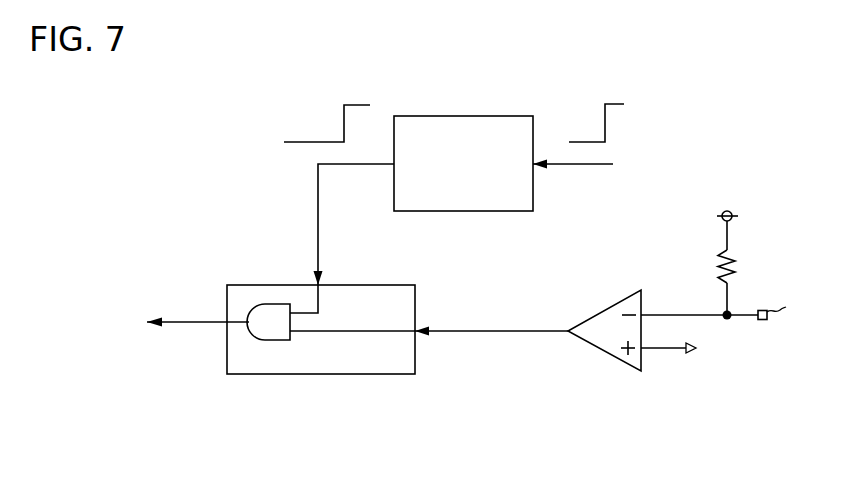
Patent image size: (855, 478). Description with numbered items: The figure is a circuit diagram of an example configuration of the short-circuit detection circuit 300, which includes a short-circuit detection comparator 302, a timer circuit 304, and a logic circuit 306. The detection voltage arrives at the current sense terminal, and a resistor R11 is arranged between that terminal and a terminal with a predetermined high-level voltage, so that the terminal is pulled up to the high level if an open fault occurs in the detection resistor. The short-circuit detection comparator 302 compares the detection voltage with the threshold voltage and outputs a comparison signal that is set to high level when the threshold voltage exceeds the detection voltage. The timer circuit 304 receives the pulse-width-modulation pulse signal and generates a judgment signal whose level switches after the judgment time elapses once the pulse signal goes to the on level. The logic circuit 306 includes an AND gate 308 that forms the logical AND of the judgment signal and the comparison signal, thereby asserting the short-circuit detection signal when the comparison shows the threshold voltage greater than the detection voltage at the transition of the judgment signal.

The short-circuit detection circuit 300 is at (425, 277).
The short-circuit detection comparator 302 is at (622, 362).
The timer circuit 304 is at (513, 211).
The logic circuit 306 is at (321, 347).
The AND gate 308 is at (278, 340).
The resistor R11 is at (736, 258).